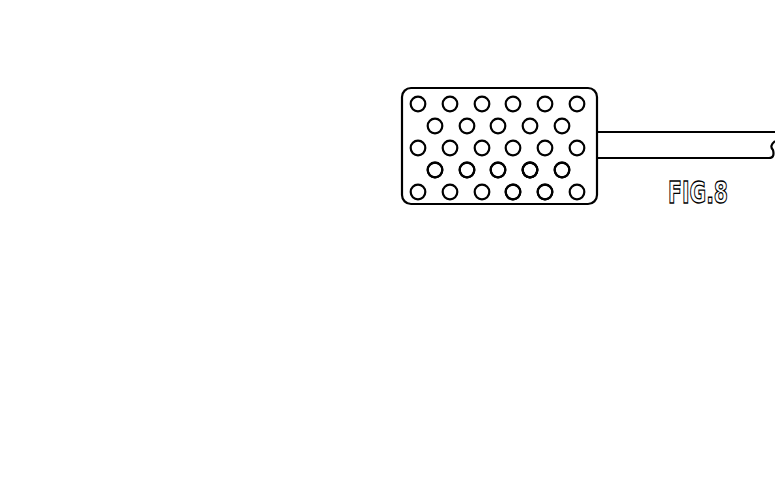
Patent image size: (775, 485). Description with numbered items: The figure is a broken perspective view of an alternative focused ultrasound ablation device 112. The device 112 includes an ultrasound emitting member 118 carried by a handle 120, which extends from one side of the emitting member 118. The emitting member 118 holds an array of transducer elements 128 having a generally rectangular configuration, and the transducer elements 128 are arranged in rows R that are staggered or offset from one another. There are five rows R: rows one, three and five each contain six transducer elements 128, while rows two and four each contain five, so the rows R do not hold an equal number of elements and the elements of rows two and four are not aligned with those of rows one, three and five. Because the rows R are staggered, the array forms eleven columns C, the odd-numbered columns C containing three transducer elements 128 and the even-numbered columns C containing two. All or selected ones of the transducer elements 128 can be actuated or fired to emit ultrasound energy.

The focused ultrasound ablation device 112 is at (655, 112).
The ultrasound emitting member 118 is at (501, 86).
The handle 120 is at (728, 129).
The transducer elements 128 is at (411, 148).
The rows R is at (406, 190).
The columns C is at (532, 178).